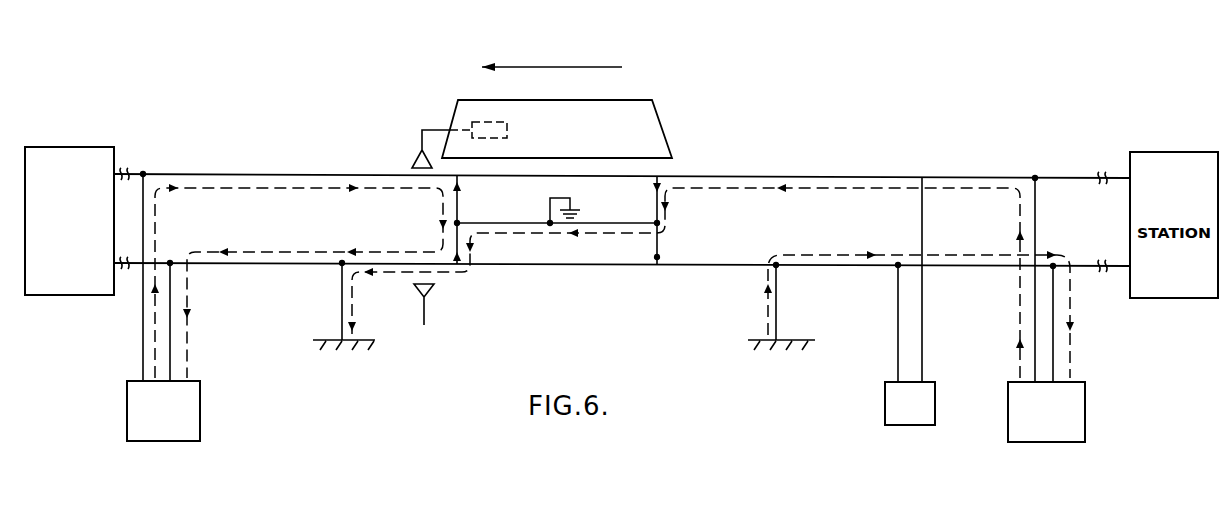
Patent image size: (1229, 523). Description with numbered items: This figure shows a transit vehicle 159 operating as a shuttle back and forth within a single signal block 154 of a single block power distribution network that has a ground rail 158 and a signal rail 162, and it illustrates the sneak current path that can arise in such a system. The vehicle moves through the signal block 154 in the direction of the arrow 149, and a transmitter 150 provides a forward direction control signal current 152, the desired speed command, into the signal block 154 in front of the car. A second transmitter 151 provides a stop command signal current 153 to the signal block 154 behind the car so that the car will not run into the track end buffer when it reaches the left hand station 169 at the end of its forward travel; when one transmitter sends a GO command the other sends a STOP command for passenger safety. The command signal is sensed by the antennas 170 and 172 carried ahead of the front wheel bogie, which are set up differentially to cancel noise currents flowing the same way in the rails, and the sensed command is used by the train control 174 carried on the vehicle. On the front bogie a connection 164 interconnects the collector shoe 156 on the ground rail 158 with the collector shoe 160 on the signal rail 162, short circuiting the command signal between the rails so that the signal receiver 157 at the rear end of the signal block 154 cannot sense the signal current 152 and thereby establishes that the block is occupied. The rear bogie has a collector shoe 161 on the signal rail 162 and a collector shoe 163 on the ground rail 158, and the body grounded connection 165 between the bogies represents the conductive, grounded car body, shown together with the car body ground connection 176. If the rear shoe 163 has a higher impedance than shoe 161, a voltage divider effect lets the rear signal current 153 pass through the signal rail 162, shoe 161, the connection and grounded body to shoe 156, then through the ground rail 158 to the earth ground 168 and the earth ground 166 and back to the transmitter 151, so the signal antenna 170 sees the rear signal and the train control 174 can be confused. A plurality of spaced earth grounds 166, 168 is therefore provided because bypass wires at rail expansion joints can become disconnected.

The arrow 149 is at (556, 67).
The transmitter 150 is at (201, 415).
The transmitter 151 is at (1086, 406).
The forward direction control signal current 152 is at (338, 192).
The rear command signal current 153 is at (822, 190).
The signal block 154 is at (706, 227).
The collector shoe 156 is at (460, 258).
The signal receiver 157 is at (921, 425).
The ground rail 158 is at (707, 267).
The vehicle 159 is at (623, 137).
The collector shoe 160 is at (462, 182).
The collector shoe 161 is at (662, 178).
The signal rail 162 is at (802, 175).
The rear collector shoe 163 is at (653, 258).
The connection 164 is at (655, 221).
The body grounded connection 165 is at (598, 215).
The earth ground 166 is at (780, 300).
The earth ground 168 is at (338, 300).
The left hand station 169 is at (80, 296).
The signal antenna 170 is at (416, 292).
The antenna 172 is at (417, 158).
The train control 174 is at (509, 137).
The car body ground connection 176 is at (548, 226).